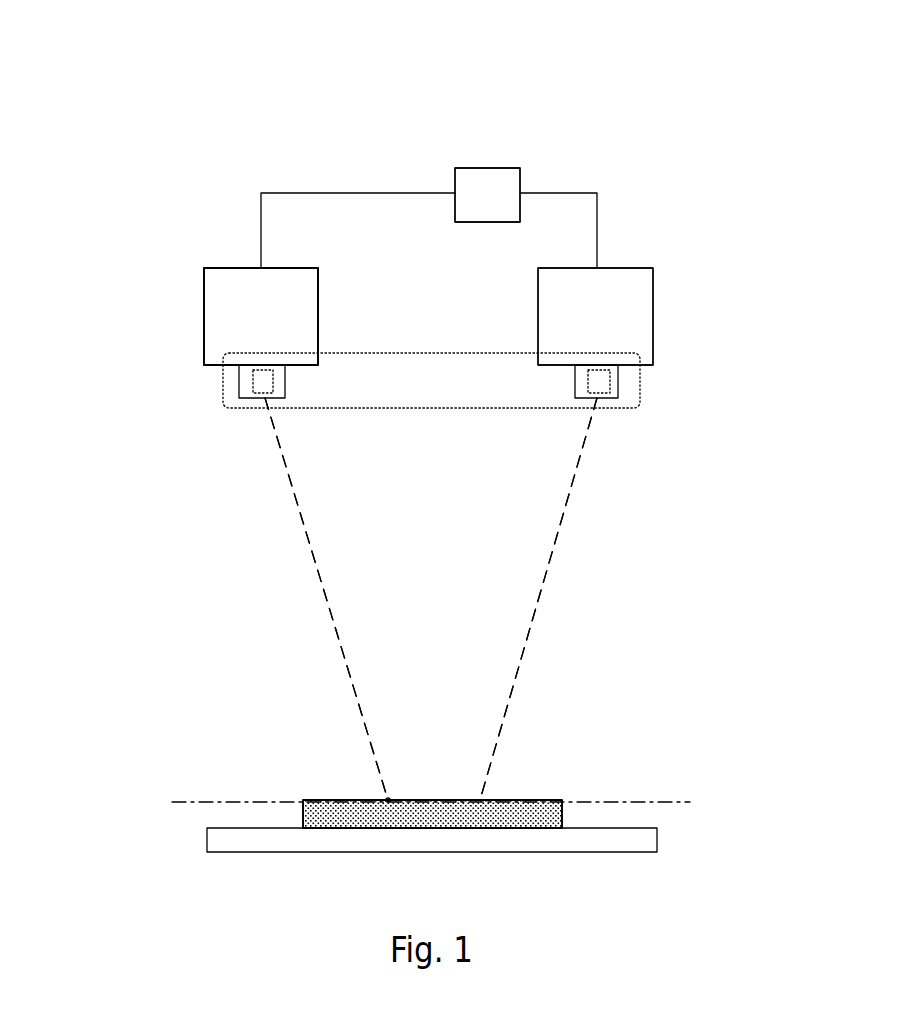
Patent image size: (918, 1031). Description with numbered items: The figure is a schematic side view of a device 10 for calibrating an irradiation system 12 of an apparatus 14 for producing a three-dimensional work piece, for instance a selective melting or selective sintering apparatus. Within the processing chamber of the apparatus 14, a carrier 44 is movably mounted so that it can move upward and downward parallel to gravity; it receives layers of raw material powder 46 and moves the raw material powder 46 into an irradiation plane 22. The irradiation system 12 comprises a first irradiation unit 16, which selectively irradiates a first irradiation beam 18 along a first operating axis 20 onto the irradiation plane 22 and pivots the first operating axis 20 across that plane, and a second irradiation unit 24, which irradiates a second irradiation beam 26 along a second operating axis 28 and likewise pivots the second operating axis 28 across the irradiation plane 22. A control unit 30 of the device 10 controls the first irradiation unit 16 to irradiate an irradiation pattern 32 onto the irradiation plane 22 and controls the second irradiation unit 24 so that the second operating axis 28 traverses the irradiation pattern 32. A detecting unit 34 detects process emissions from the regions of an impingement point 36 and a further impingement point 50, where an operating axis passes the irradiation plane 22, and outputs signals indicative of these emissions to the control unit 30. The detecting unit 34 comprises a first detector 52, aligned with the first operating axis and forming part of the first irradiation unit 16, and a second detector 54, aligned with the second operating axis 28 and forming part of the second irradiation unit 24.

The device 10 is at (620, 108).
The irradiation system 12 is at (322, 108).
The apparatus 14 is at (112, 98).
The first irradiation unit 16 is at (225, 314).
The first irradiation beam 18 is at (296, 510).
The first operating axis 20 is at (326, 599).
The irradiation plane 22 is at (212, 800).
The second irradiation unit 24 is at (625, 320).
The second irradiation beam 26 is at (562, 522).
The second operating axis 28 is at (538, 599).
The control unit 30 is at (498, 183).
The irradiation pattern 32 is at (353, 800).
The detecting unit 34 is at (225, 409).
The impingement point 36 is at (477, 800).
The carrier 44 is at (598, 838).
The raw material powder 46 is at (515, 802).
The impingement point 50 is at (388, 800).
The first detector 52 is at (240, 375).
The second detector 54 is at (640, 368).